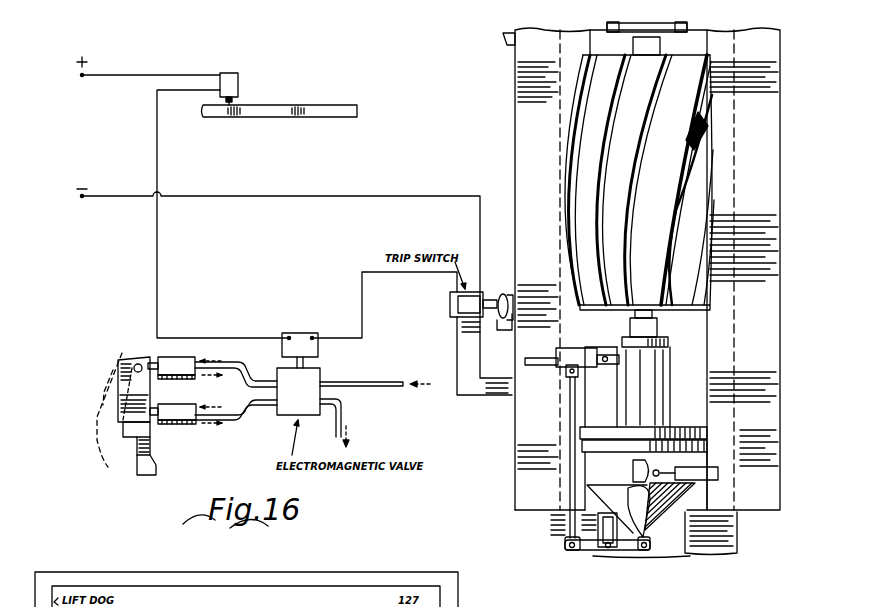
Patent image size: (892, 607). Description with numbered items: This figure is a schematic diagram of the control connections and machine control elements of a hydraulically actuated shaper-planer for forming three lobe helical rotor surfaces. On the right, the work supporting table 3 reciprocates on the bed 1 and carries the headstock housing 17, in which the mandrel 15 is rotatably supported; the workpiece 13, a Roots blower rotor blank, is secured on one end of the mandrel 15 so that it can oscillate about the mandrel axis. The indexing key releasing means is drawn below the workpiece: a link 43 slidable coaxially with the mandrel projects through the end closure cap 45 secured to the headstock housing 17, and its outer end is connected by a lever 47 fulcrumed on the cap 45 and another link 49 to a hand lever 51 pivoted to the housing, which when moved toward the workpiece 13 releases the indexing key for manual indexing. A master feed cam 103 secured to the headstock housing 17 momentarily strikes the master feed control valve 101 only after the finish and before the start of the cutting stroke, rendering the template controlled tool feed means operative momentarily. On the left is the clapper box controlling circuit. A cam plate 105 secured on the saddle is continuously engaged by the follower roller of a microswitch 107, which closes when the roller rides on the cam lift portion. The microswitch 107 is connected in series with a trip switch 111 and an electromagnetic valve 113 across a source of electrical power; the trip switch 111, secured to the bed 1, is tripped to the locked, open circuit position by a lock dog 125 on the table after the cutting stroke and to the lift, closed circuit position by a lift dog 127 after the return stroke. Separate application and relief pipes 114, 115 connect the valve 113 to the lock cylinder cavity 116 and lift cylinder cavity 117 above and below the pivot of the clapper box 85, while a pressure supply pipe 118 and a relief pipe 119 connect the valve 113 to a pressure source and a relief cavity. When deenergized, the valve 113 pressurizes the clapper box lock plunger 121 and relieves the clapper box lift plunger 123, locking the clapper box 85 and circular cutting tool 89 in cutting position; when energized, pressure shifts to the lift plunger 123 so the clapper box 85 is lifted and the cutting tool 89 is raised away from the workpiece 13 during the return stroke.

The bed 1 is at (566, 533).
The work supporting table 3 is at (525, 158).
The workpiece 13 is at (578, 224).
The mandrel 15 is at (655, 312).
The headstock housing 17 is at (595, 427).
The link 43 is at (668, 592).
The end closure cap 45 is at (700, 470).
The lever 47 is at (590, 552).
The link 49 is at (570, 440).
The hand lever 51 is at (538, 360).
The clapper box 85 is at (118, 404).
The circular cutting tool 89 is at (140, 457).
The master feed control valve 101 is at (650, 465).
The master feed cam 103 is at (651, 475).
The cam plate 105 is at (285, 113).
The microswitch 107 is at (300, 47).
The trip switch 111 is at (497, 322).
The electromagnetic valve 113 is at (310, 370).
The hydraulic application and relief pipe 114 is at (250, 375).
The hydraulic application and relief pipe 115 is at (258, 410).
The lock cylinder cavity 116 is at (183, 362).
The lift cylinder cavity 117 is at (185, 410).
The pressure supply pipe 118 is at (398, 382).
The relief pipe 119 is at (312, 418).
The clapper box lock plunger 121 is at (152, 365).
The clapper box lift plunger 123 is at (160, 405).
The lock dog 125 is at (506, 312).
The lift dog 127 is at (503, 41).